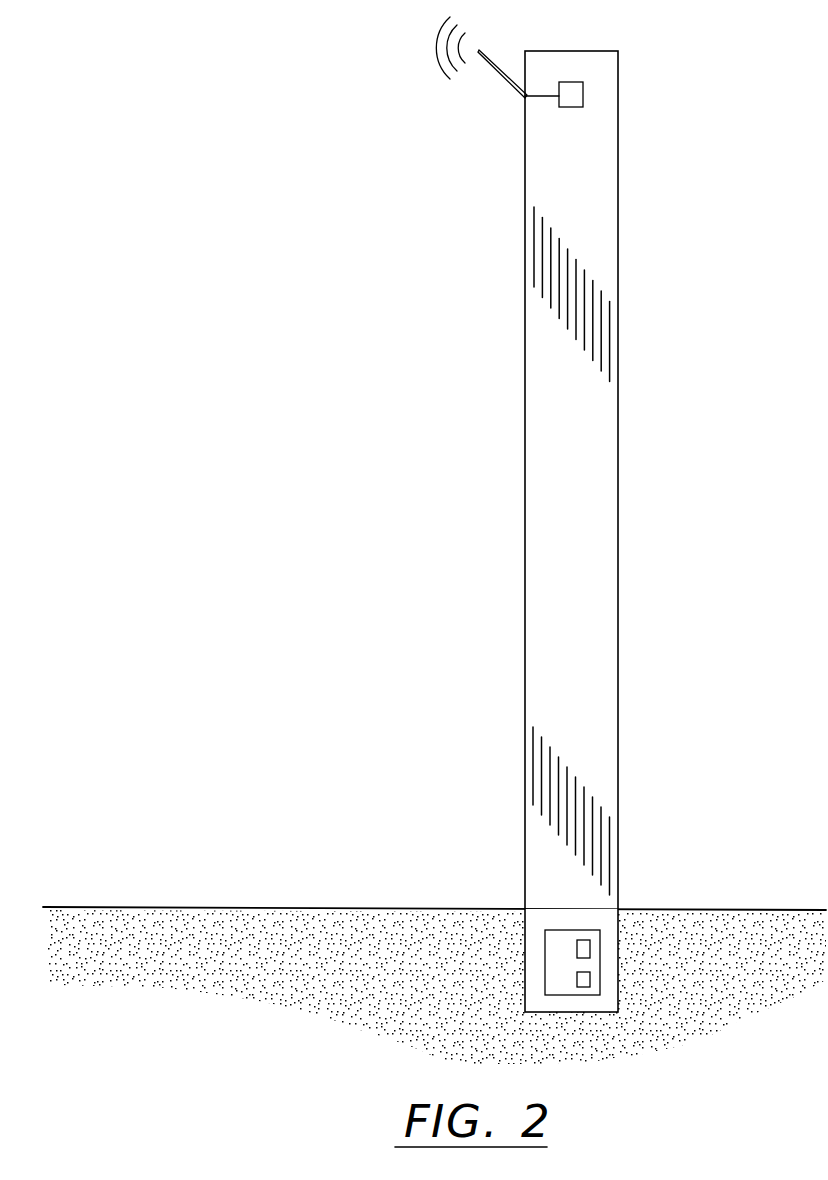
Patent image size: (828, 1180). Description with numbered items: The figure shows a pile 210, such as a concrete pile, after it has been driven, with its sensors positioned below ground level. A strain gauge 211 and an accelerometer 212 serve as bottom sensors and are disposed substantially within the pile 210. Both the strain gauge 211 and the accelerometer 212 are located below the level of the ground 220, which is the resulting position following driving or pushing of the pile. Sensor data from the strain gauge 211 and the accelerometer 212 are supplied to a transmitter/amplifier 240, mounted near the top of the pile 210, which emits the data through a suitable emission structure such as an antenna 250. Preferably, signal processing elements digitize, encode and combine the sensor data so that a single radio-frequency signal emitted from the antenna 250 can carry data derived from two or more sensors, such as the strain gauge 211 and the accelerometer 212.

The pile 210 is at (525, 525).
The strain gauge 211 is at (585, 978).
The accelerometer 212 is at (586, 946).
The ground 220 is at (257, 905).
The transmitter/amplifier 240 is at (578, 100).
The antenna 250 is at (503, 78).